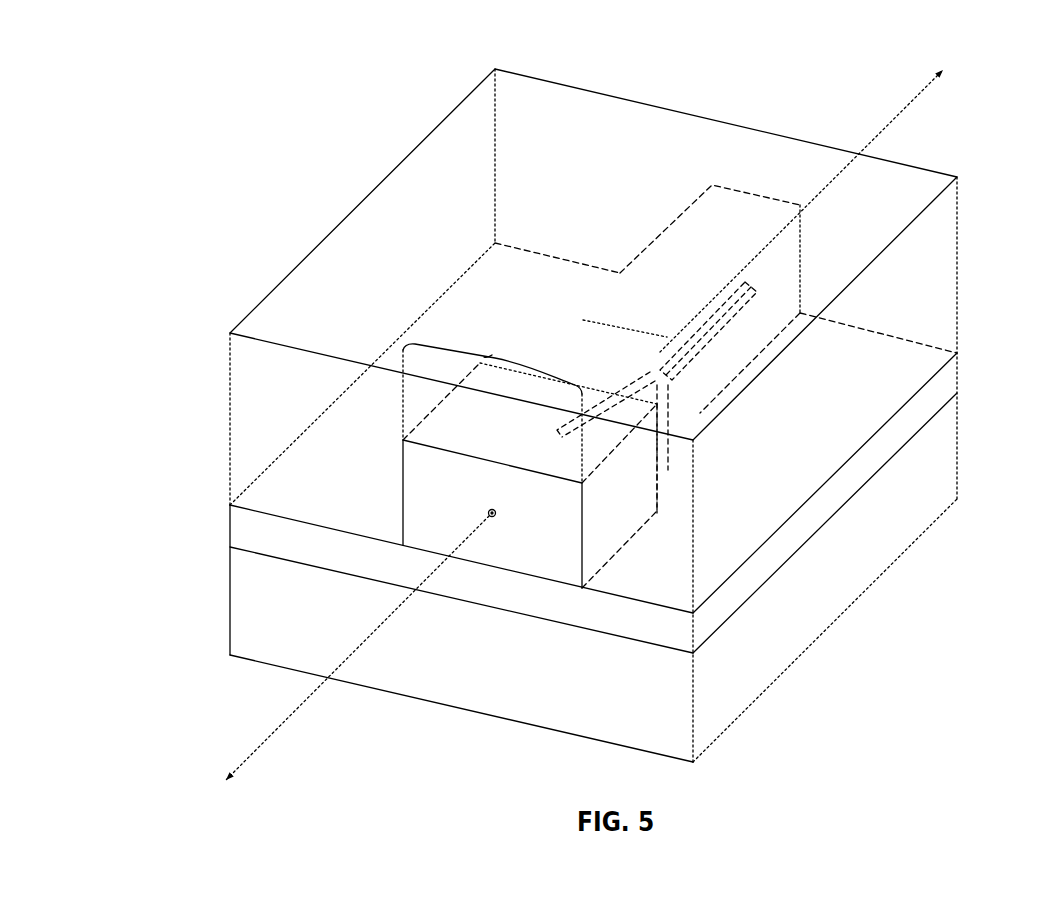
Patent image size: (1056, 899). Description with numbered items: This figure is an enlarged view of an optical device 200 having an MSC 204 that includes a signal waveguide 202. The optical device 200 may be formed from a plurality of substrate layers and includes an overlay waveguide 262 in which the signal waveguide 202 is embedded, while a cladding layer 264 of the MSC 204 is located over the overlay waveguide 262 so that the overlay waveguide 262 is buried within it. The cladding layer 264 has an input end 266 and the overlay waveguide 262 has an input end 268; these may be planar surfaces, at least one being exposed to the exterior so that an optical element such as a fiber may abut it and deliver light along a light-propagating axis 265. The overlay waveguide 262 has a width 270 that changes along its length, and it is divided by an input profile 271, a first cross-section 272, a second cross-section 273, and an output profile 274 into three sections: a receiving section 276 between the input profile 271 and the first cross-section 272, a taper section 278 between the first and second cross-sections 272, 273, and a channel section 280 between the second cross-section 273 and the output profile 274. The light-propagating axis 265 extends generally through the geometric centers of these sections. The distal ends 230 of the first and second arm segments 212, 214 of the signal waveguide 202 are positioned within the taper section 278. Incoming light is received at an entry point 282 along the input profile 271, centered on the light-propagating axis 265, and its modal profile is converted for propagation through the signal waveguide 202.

The optical device 200 is at (965, 108).
The signal waveguide 202 is at (698, 313).
The MSC 204 is at (492, 355).
The first arm segment 212 is at (677, 385).
The second arm segment 214 is at (608, 450).
The distal ends 230 is at (585, 400).
The overlay waveguide 262 is at (505, 463).
The cladding layer 264 is at (258, 325).
The light-propagating axis 265 is at (305, 702).
The input end 266 is at (257, 415).
The input end 268 is at (413, 523).
The width 270 is at (505, 358).
The input profile 271 is at (450, 452).
The first cross-section 272 is at (510, 303).
The second cross-section 273 is at (623, 327).
The output profile 274 is at (802, 268).
The receiving section 276 is at (630, 540).
The taper section 278 is at (590, 337).
The channel section 280 is at (754, 222).
The entry point 282 is at (495, 517).